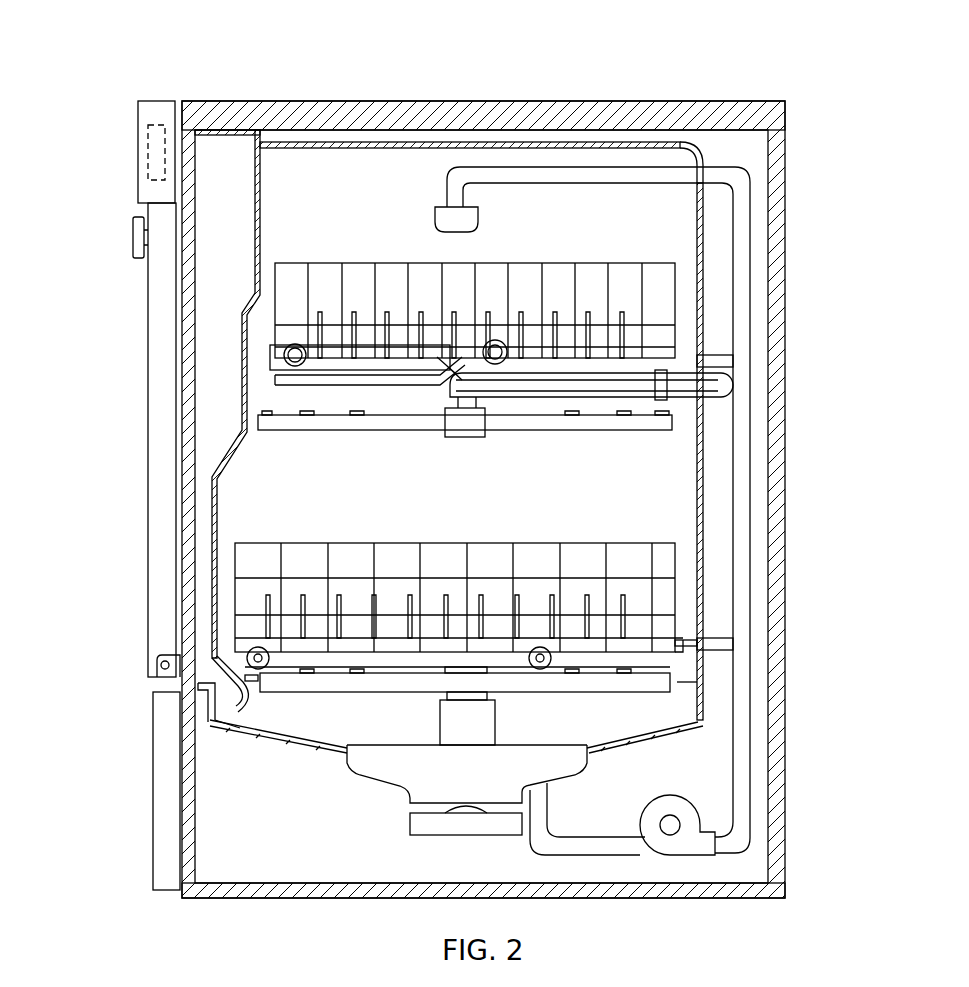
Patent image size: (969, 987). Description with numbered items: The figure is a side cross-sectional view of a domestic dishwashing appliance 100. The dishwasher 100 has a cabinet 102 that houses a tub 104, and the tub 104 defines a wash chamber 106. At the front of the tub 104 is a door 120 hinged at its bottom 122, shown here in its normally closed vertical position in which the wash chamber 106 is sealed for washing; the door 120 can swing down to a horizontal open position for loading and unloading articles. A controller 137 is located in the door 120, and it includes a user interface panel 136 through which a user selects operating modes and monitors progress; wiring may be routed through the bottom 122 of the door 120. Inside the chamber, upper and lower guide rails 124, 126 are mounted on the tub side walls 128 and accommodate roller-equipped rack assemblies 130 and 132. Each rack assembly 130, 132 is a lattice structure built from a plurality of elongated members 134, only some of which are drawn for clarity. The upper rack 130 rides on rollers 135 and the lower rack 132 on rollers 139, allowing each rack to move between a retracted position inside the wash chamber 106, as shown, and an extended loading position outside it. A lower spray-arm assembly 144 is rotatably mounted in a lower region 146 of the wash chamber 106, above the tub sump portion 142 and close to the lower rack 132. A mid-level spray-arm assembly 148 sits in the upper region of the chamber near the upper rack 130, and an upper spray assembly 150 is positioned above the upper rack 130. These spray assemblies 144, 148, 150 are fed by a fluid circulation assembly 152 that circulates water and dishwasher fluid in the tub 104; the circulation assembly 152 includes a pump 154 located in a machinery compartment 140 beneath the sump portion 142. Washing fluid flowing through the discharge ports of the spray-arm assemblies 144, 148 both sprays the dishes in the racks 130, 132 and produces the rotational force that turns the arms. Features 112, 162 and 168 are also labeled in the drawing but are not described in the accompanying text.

The dishwashing appliance 100 is at (634, 86).
The cabinet 102 is at (508, 490).
The tub 104 is at (515, 495).
The wash chamber 106 is at (250, 483).
The fluid conduit 112 is at (614, 386).
The door 120 is at (147, 552).
The bottom of door 122 is at (156, 680).
The upper guide rail 124 is at (268, 357).
The lower guide rail 126 is at (217, 705).
The tub side walls 128 is at (352, 175).
The upper rack assembly 130 is at (330, 248).
The lower rack assembly 132 is at (543, 538).
The elongated members 134 is at (358, 325).
The rollers 135 is at (278, 382).
The user interface panel 136 is at (133, 240).
The controller 137 is at (138, 145).
The rollers 139 is at (540, 669).
The machinery compartment 140 is at (312, 858).
The tub sump portion 142 is at (690, 737).
The lower spray-arm assembly 144 is at (300, 690).
The lower region of wash chamber 146 is at (686, 660).
The mid-level spray-arm assembly 148 is at (503, 421).
The upper spray assembly 150 is at (478, 228).
The fluid circulation assembly 152 is at (752, 470).
The pump 154 is at (670, 808).
The roller 162 is at (247, 652).
The docking port 168 is at (714, 350).